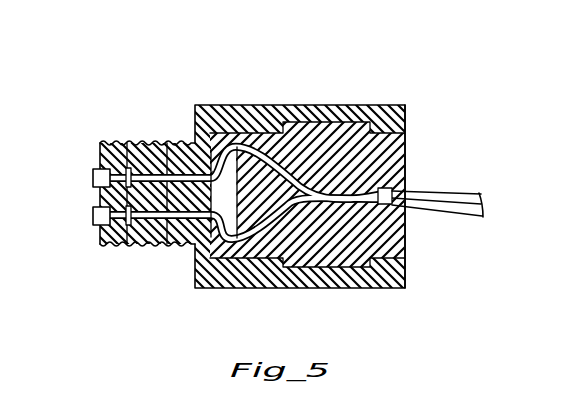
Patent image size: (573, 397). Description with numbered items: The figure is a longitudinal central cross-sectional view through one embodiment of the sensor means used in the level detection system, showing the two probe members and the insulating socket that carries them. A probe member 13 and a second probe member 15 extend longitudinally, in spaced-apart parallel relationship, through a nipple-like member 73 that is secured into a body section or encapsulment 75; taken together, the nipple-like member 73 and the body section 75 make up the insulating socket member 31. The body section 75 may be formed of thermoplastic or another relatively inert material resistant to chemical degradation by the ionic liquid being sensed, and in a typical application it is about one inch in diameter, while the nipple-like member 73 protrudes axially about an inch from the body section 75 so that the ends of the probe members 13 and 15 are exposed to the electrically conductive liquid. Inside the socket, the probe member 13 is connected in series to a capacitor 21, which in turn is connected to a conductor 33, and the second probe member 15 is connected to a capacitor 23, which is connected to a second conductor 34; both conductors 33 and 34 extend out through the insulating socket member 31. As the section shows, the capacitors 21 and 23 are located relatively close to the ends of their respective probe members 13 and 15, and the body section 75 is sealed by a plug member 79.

The probe member 13 is at (93, 213).
The second probe member 15 is at (93, 178).
The capacitor 21 is at (127, 246).
The capacitor 23 is at (128, 143).
The insulating socket member 31 is at (341, 97).
The conductor 33 is at (164, 249).
The second conductor 34 is at (163, 143).
The nipple-like member 73 is at (114, 143).
The body section 75 is at (278, 104).
The plug member 79 is at (407, 163).